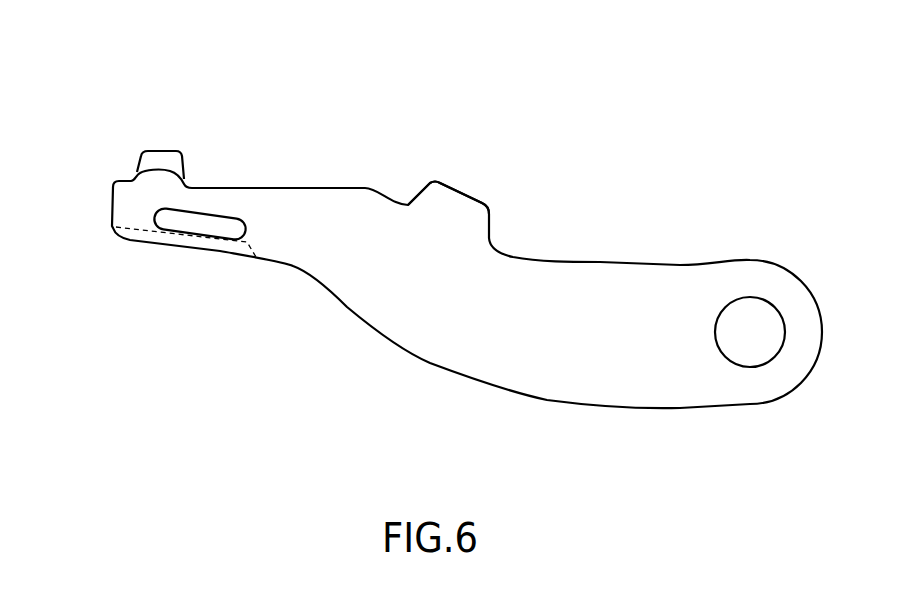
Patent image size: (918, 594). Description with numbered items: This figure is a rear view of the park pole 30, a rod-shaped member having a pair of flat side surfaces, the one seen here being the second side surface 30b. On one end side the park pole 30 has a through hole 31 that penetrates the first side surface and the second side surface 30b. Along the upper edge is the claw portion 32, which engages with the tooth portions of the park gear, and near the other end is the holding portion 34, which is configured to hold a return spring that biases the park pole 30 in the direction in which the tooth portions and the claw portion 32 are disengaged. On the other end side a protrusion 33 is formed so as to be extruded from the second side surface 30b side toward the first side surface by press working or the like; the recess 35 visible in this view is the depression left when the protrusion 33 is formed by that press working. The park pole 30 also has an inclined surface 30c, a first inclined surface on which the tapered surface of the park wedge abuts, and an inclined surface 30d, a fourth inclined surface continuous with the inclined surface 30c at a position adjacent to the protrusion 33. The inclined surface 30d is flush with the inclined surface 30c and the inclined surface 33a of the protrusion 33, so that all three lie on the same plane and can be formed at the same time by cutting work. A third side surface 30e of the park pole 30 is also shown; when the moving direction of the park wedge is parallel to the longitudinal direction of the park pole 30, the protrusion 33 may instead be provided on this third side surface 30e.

The park pole 30 is at (619, 132).
The second side surface 30b is at (478, 327).
The inclined surface 30c is at (200, 241).
The inclined surface 30d is at (118, 242).
The third side surface 30e is at (112, 193).
The through hole 31 is at (760, 330).
The claw portion 32 is at (460, 217).
The protrusion 33 is at (230, 227).
The inclined surface 33a is at (174, 228).
The holding portion 34 is at (162, 160).
The recess 35 is at (210, 218).